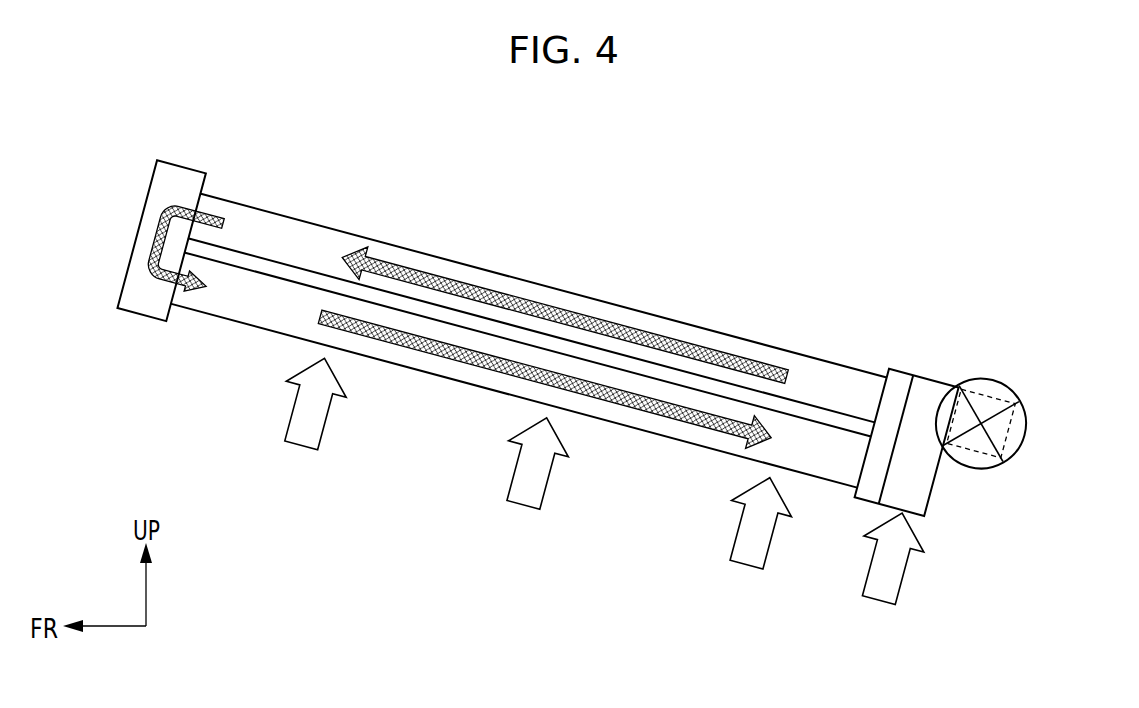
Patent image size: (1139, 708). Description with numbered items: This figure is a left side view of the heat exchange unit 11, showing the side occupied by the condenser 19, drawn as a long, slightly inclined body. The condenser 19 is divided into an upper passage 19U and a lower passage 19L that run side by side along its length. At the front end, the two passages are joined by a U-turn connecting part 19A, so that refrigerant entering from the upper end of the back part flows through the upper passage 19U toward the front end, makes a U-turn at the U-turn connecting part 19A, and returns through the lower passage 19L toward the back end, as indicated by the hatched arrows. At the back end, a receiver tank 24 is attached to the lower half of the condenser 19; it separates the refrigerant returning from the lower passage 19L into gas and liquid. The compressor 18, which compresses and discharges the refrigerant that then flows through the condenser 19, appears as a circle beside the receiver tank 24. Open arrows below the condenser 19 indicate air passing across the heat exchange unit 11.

The heat exchange unit 11 is at (617, 315).
The condenser 19 is at (822, 360).
The upper passage 19U is at (308, 242).
The lower passage 19L is at (283, 317).
The U-turn connecting part 19A is at (175, 175).
The receiver tank 24 is at (923, 490).
The compressor 18 is at (1025, 402).